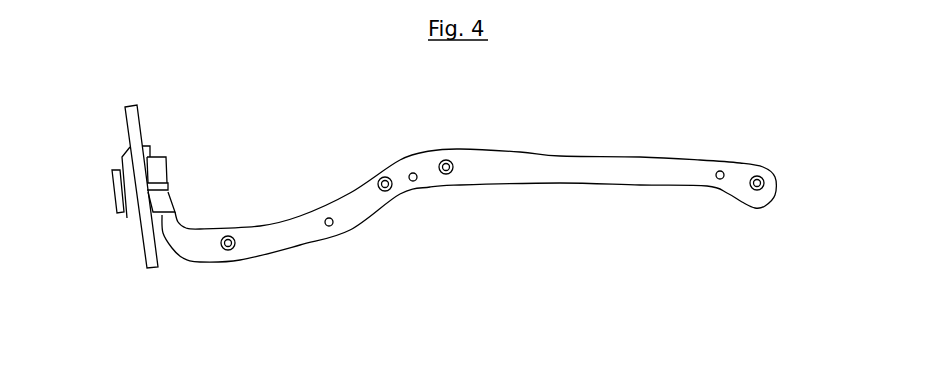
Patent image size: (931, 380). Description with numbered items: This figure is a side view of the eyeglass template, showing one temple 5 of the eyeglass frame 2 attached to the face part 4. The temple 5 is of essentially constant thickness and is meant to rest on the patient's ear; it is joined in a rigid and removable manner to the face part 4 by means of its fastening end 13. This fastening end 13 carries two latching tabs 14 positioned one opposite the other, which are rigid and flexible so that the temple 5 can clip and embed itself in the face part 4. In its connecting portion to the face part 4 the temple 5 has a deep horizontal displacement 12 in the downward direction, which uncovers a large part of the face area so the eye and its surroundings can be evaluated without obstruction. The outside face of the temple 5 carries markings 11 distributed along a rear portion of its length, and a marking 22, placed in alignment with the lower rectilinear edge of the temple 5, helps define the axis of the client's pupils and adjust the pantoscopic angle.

The eyeglass frame 2 is at (419, 179).
The face part 4 is at (161, 149).
The temple 5 is at (588, 139).
The markings 11 is at (492, 179).
The horizontal displacement 12 is at (281, 243).
The fastening end 13 is at (206, 146).
The latching tabs 14 is at (96, 220).
The marking 22 is at (193, 258).